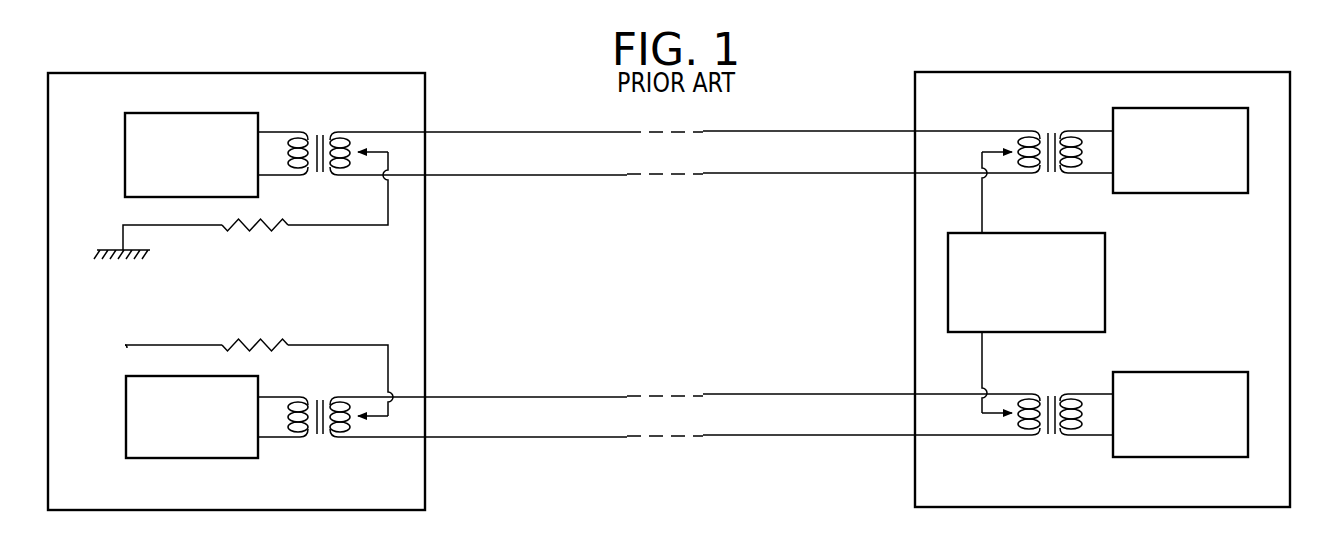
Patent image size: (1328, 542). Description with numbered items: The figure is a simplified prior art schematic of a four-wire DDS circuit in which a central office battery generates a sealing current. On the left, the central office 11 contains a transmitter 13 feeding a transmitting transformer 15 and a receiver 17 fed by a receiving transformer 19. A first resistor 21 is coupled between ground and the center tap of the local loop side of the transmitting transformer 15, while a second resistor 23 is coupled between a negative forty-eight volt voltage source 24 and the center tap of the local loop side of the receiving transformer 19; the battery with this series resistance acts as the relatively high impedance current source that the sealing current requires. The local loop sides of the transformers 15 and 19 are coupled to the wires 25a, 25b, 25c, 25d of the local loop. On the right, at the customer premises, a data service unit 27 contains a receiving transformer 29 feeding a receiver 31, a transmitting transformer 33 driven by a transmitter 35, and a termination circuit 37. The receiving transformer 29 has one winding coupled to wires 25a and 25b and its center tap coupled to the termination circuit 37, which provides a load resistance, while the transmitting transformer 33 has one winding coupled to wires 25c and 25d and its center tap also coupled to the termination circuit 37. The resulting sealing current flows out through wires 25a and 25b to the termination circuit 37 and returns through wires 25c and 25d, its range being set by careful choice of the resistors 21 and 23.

The central office 11 is at (134, 61).
The transmitter 13 is at (172, 113).
The transmitting transformer 15 is at (315, 136).
The receiver 17 is at (150, 458).
The receiving transformer 19 is at (318, 441).
The first resistor 21 is at (285, 228).
The second resistor 23 is at (285, 343).
The −48 V voltage source 24 is at (127, 348).
The wire 25a is at (465, 131).
The wire 25b is at (465, 175).
The wire 25c is at (465, 396).
The wire 25d is at (465, 437).
The data service unit 27 is at (1127, 62).
The receiving transformer 29 is at (1045, 133).
The receiver 31 is at (1150, 108).
The transmitting transformer 33 is at (1045, 395).
The transmitter 35 is at (1165, 372).
The termination circuit 37 is at (1105, 283).